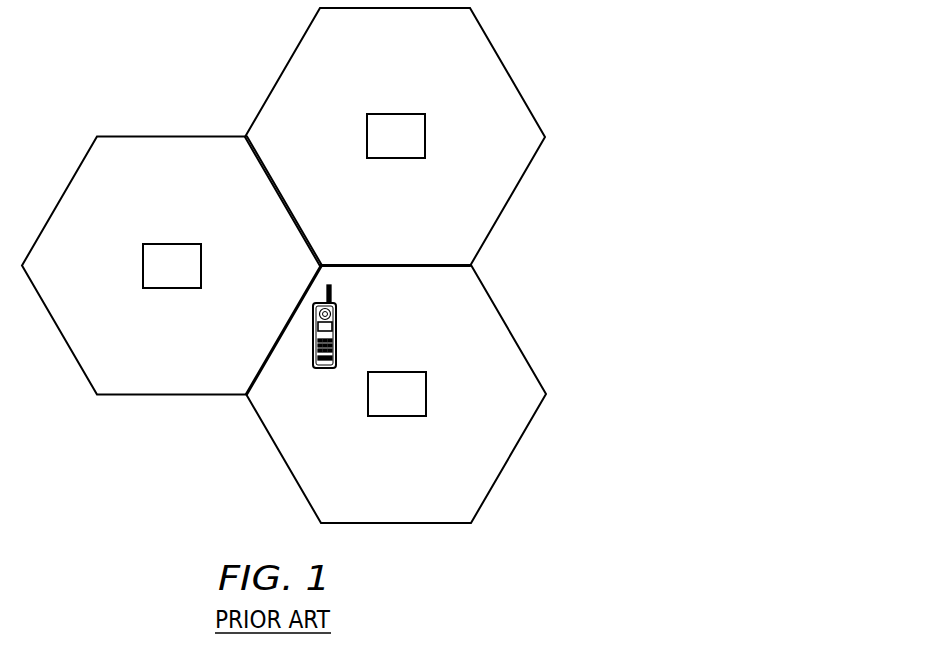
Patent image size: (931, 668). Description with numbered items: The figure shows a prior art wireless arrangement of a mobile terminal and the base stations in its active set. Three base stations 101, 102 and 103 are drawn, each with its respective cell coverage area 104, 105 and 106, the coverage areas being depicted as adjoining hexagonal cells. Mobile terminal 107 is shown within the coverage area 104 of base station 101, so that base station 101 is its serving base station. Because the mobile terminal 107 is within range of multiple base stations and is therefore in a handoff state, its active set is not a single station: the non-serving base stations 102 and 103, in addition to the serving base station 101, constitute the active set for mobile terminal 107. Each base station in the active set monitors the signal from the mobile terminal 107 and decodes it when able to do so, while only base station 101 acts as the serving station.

The base station 101 is at (427, 395).
The base station 102 is at (426, 137).
The base station 103 is at (202, 267).
The cell coverage area 104 is at (510, 330).
The cell coverage area 105 is at (508, 72).
The cell coverage area 106 is at (171, 136).
The mobile terminal 107 is at (337, 333).